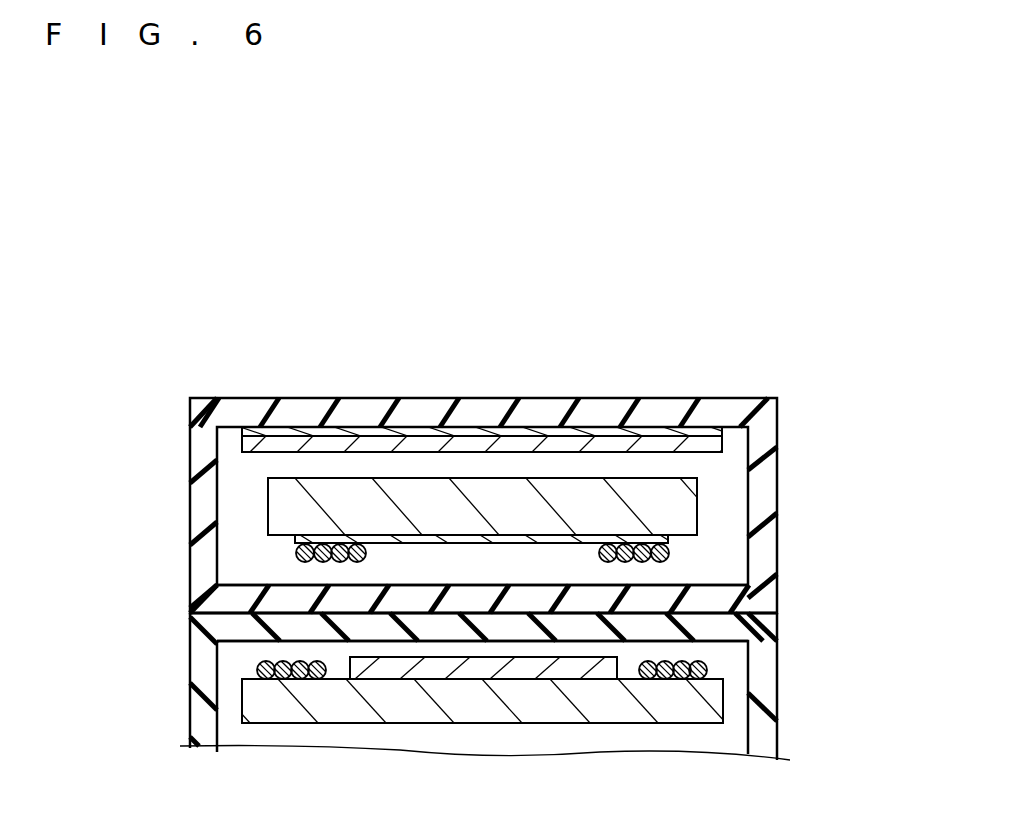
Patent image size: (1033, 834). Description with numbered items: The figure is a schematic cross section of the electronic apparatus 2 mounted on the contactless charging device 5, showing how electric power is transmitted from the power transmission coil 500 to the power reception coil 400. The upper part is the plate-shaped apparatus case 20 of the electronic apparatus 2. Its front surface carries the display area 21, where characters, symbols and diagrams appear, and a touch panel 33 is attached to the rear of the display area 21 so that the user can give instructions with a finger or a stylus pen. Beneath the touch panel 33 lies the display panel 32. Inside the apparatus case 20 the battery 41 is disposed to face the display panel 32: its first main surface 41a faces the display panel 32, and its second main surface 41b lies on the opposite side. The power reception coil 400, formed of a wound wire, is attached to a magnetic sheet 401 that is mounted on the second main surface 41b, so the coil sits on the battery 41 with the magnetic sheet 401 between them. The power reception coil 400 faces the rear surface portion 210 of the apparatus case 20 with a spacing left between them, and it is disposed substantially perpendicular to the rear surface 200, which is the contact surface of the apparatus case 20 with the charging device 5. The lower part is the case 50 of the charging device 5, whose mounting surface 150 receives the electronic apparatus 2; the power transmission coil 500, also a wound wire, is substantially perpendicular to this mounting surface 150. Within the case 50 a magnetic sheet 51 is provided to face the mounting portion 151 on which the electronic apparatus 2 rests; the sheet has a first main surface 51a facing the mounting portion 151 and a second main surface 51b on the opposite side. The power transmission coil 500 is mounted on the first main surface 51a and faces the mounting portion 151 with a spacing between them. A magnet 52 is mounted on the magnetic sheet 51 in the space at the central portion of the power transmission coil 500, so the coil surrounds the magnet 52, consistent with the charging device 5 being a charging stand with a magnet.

The electronic apparatus 2 is at (218, 378).
The display area 21 is at (723, 373).
The apparatus case 20 is at (740, 410).
The rear surface portion 210 is at (295, 598).
The rear surface 200 is at (190, 630).
The touch panel 33 is at (469, 428).
The display panel 32 is at (605, 446).
The battery 41 is at (685, 508).
The first main surface 41a is at (695, 497).
The second main surface 41b is at (683, 538).
The power reception coil 400 is at (645, 565).
The magnetic sheet 401 is at (466, 546).
The charging device 5 is at (797, 660).
The case 50 is at (205, 665).
The mounting surface 150 is at (200, 628).
The mounting portion 151 is at (293, 628).
The magnetic sheet 51 is at (507, 700).
The first main surface 51a is at (718, 678).
The second main surface 51b is at (695, 722).
The magnet 52 is at (391, 700).
The power transmission coil 500 is at (688, 655).